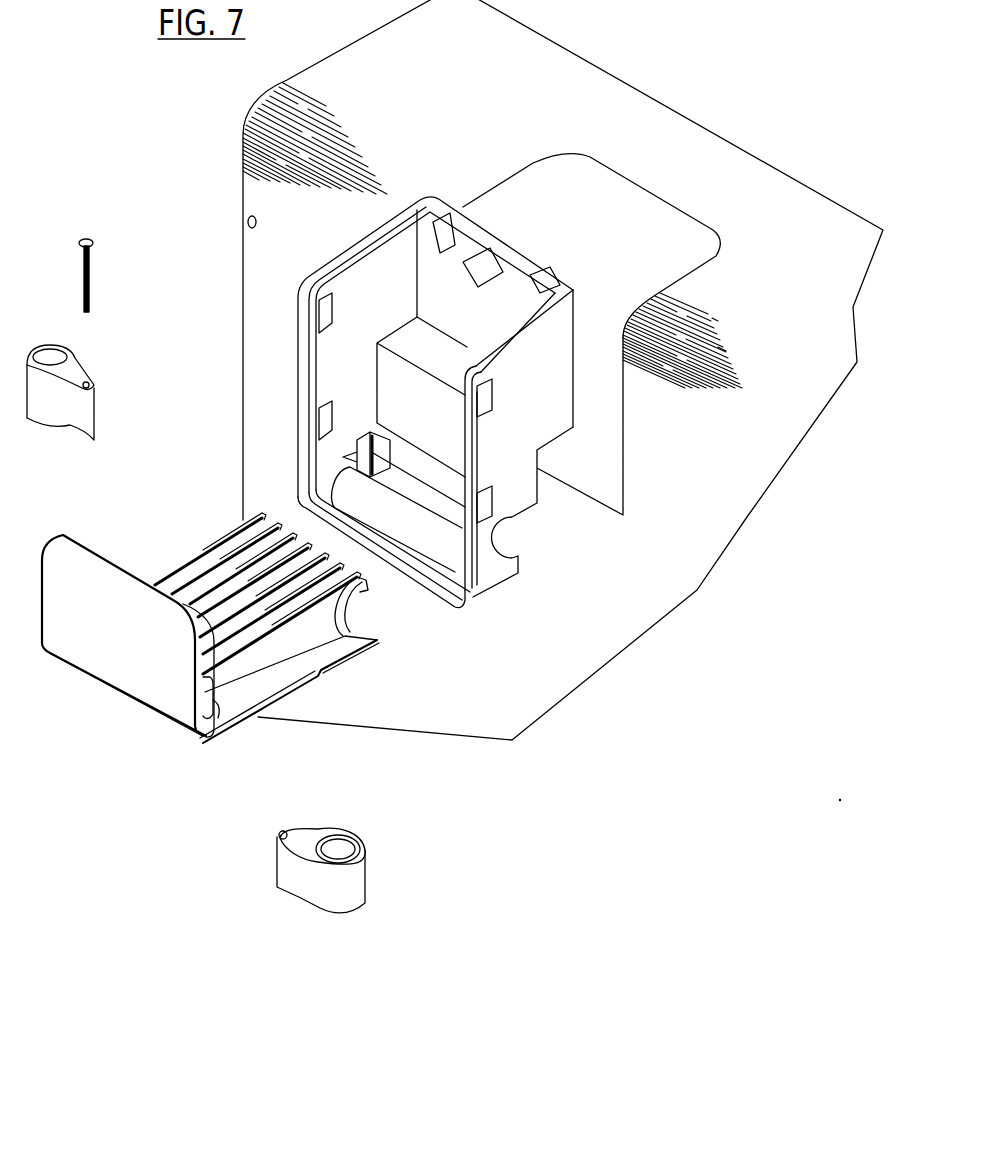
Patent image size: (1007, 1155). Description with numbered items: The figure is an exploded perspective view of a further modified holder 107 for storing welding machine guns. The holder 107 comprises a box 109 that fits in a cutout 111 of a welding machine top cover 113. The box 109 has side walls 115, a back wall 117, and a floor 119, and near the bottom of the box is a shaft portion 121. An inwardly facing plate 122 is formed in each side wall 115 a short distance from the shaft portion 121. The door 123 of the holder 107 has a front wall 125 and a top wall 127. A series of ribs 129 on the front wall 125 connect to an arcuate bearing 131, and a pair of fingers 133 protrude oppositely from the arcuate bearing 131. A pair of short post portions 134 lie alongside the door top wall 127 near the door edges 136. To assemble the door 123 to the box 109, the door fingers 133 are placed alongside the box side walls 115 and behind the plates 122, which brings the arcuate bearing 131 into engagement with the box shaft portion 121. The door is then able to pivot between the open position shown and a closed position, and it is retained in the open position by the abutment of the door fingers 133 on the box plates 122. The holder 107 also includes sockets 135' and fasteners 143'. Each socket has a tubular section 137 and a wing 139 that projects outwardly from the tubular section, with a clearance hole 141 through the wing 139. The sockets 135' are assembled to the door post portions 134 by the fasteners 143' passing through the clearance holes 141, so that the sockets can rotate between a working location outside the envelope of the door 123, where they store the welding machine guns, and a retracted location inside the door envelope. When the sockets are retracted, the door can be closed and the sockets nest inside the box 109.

The holder 107 is at (97, 696).
The box 109 is at (454, 197).
The cutout 111 is at (623, 459).
The welding machine top cover 113 is at (748, 528).
The side walls 115 is at (366, 381).
The back wall 117 is at (514, 285).
The floor 119 is at (423, 357).
The shaft portion 121 is at (452, 556).
The plate 122 is at (348, 454).
The door 123 is at (118, 618).
The front wall 125 is at (311, 708).
The top wall 127 is at (112, 602).
The ribs 129 is at (300, 633).
The arcuate bearing 131 is at (349, 612).
The fingers 133 is at (254, 516).
The post portions 134 is at (210, 741).
The sockets 135' is at (330, 933).
The door edges 136 is at (243, 723).
The tubular section 137 is at (355, 873).
The wing 139 is at (275, 853).
The clearance hole 141 is at (93, 383).
The fasteners 143' is at (60, 264).